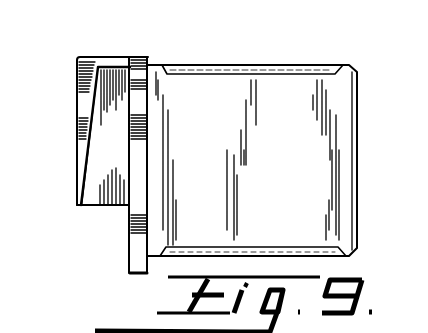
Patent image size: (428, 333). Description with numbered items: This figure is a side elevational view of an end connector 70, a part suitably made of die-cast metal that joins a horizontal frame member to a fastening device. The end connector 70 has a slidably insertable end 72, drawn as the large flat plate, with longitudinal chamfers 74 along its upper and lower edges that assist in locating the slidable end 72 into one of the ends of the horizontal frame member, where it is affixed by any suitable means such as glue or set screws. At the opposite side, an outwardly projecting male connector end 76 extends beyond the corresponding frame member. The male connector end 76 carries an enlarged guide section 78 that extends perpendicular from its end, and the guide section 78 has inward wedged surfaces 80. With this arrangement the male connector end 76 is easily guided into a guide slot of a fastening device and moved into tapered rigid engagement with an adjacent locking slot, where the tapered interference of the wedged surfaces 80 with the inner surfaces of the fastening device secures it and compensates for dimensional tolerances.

The end connector 70 is at (72, 52).
The slidably insertable end 72 is at (323, 100).
The longitudinal chamfers 74 is at (218, 65).
The male connector end 76 is at (79, 206).
The guide section 78 is at (77, 87).
The wedged surfaces 80 is at (89, 150).